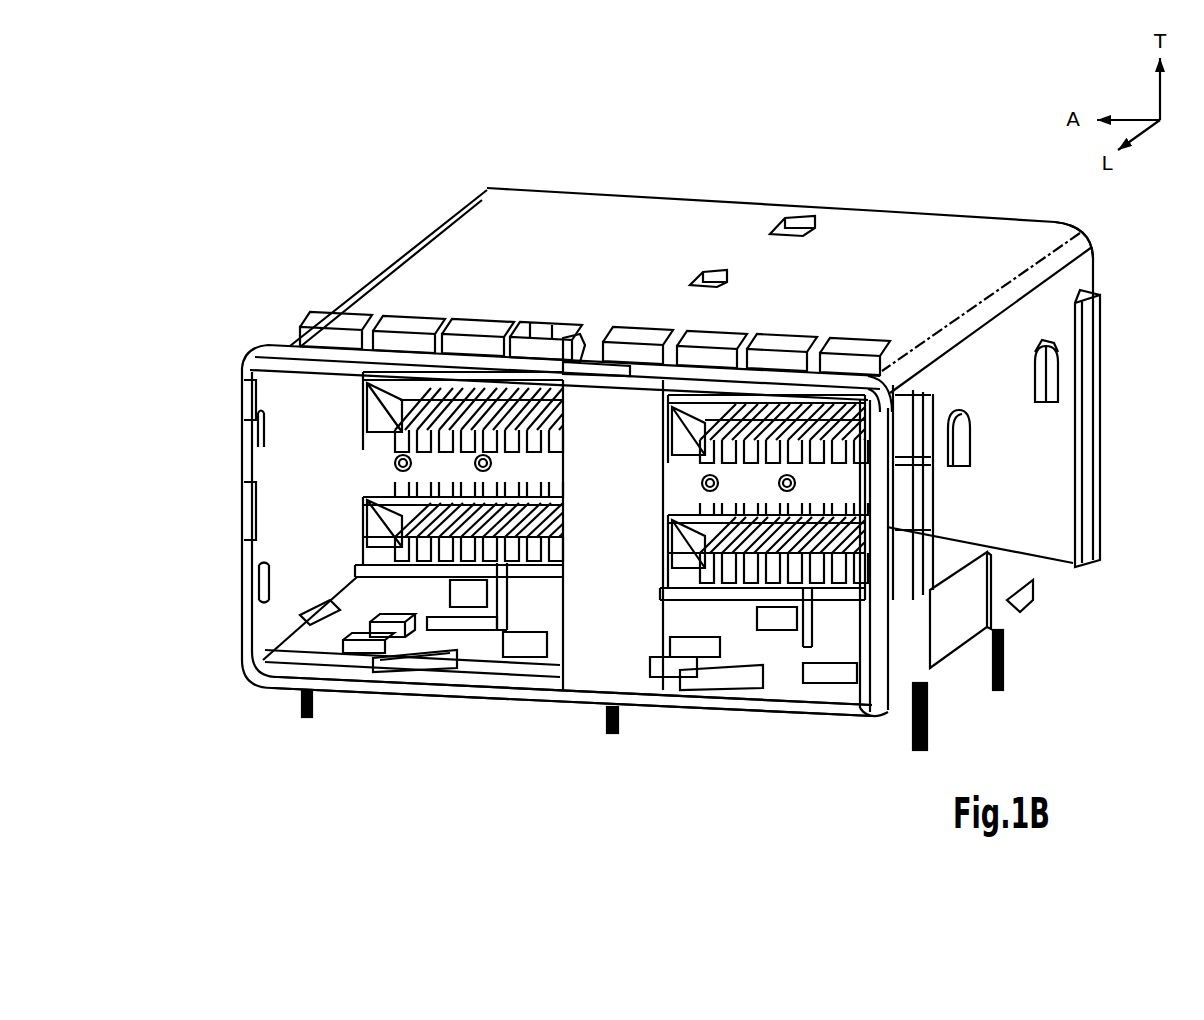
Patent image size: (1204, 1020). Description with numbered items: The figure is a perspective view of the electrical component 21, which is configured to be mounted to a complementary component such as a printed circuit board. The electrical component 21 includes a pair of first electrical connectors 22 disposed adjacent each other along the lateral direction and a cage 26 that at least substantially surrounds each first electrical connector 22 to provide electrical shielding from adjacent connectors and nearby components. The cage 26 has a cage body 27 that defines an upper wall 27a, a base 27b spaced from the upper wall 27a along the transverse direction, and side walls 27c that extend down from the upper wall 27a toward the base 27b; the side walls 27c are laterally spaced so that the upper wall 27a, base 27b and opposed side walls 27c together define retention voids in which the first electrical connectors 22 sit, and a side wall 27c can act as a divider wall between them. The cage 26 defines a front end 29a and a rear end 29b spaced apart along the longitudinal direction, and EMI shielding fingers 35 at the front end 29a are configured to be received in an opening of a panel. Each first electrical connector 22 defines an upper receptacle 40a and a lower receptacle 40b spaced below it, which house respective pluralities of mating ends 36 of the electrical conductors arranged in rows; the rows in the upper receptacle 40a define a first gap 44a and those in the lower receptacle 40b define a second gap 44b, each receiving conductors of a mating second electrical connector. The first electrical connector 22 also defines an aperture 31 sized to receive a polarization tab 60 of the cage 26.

The electrical component 21 is at (485, 112).
The first electrical connector 22 is at (373, 449).
The cage 26 is at (521, 228).
The cage body 27 is at (898, 203).
The upper wall 27a is at (937, 232).
The base 27b is at (772, 735).
The side walls 27c is at (600, 428).
The front end 29a is at (465, 695).
The rear end 29b is at (1055, 223).
The aperture 31 is at (497, 640).
The EMI shielding fingers 35 is at (543, 327).
The mating end 36 is at (1047, 353).
The upper receptacle 40a is at (680, 397).
The lower receptacle 40b is at (363, 530).
The first gap 44a is at (723, 395).
The second gap 44b is at (385, 512).
The polarization tab 60 is at (445, 625).